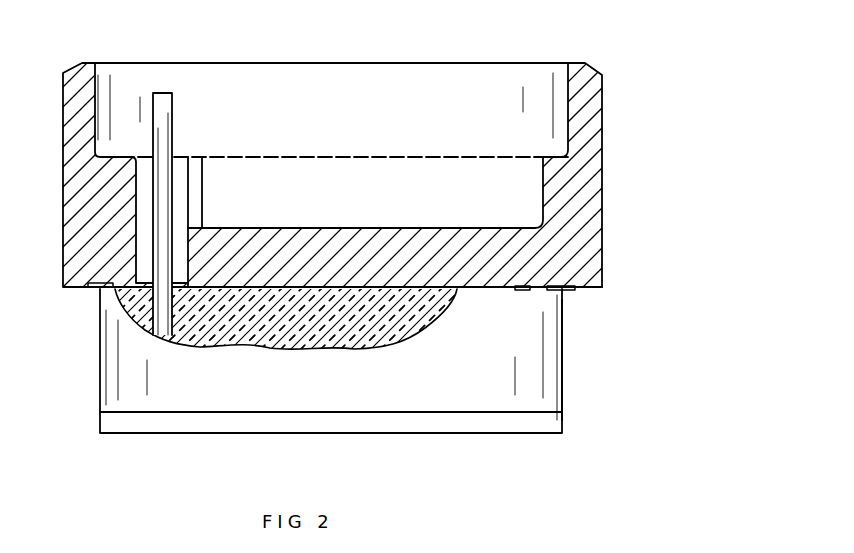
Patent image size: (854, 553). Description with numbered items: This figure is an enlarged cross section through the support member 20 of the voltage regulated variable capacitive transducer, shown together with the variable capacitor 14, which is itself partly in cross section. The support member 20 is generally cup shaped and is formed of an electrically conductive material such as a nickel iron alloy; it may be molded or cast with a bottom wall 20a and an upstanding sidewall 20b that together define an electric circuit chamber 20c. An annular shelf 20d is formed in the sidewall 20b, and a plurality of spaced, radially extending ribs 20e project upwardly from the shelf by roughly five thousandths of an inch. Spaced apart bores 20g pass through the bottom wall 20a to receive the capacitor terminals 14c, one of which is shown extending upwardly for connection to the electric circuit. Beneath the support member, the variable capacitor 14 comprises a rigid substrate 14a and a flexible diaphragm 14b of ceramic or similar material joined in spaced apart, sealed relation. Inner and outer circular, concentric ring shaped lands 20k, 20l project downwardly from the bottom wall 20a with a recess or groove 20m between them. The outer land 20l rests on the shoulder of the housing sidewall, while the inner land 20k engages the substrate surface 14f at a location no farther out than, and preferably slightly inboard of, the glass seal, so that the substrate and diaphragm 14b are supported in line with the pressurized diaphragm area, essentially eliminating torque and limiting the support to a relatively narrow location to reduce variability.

The support member 20 is at (602, 207).
The bottom wall 20a is at (457, 245).
The sidewall 20b is at (585, 132).
The electric circuit chamber 20c is at (390, 199).
The annular shelf 20d is at (300, 156).
The ribs 20e is at (545, 155).
The bores 20g is at (190, 240).
The inner ring shaped land 20k is at (537, 290).
The outer ring shaped land 20l is at (590, 290).
The recess or groove 20m is at (570, 290).
The variable capacitor 14 is at (562, 417).
The substrate 14a is at (562, 385).
The diaphragm 14b is at (177, 433).
The capacitor terminals 14c is at (162, 112).
The substrate surface 14f is at (517, 287).